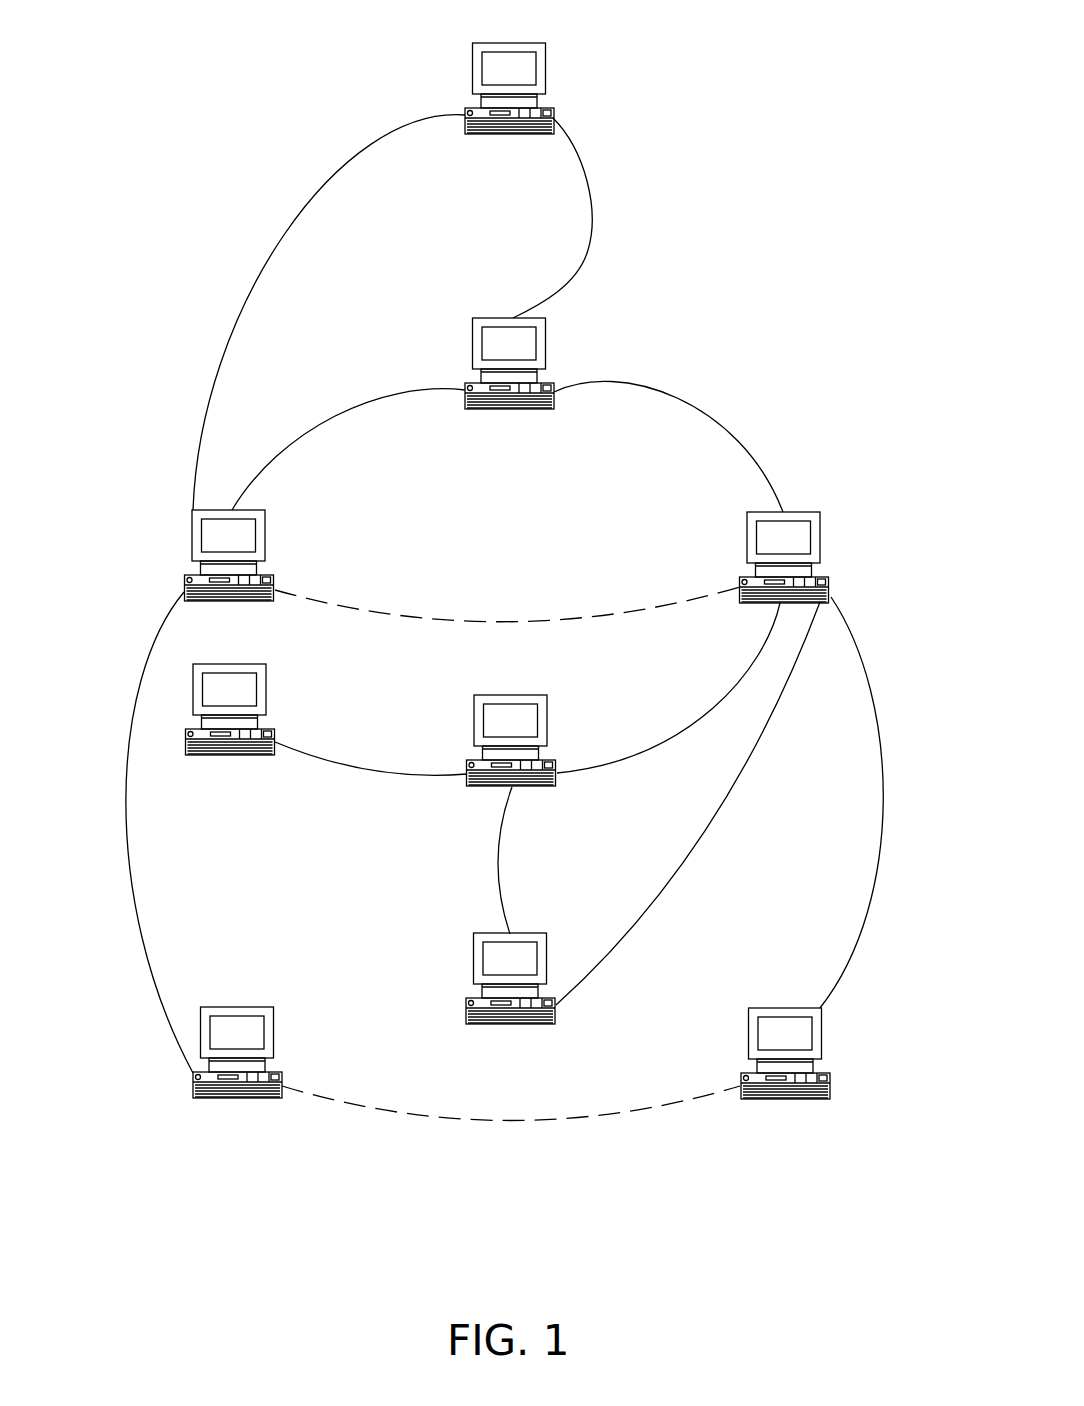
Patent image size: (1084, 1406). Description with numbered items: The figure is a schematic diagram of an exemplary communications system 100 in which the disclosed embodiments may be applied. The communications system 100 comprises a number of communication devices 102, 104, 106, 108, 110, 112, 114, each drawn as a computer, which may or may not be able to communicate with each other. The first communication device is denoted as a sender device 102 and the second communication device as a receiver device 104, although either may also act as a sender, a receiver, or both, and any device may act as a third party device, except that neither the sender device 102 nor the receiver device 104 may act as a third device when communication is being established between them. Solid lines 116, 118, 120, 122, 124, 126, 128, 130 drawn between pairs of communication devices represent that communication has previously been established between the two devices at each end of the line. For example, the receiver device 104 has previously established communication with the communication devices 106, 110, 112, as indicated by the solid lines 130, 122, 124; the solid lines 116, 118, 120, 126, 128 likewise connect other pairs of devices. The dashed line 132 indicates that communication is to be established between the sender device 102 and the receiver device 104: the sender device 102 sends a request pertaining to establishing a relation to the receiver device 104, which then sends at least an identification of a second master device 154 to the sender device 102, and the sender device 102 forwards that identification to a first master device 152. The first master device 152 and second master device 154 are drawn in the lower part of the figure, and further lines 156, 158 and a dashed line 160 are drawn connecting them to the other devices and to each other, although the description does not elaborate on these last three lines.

The communications system 100 is at (733, 118).
The sender device 102 is at (192, 538).
The receiver device 104 is at (820, 538).
The communication device 106 is at (509, 410).
The communication device 108 is at (512, 43).
The communication device 110 is at (514, 695).
The communication device 112 is at (467, 1010).
The communication device 114 is at (233, 755).
The solid line 116 is at (370, 396).
The solid line 118 is at (323, 183).
The solid line 120 is at (590, 236).
The solid line 122 is at (602, 765).
The solid line 124 is at (729, 809).
The solid line 126 is at (320, 757).
The solid line 128 is at (490, 866).
The solid line 130 is at (690, 408).
The dashed line 132 is at (505, 620).
The first master device 152 is at (238, 1100).
The second master device 154 is at (787, 1100).
The communication link 156 is at (170, 1033).
The communication link 158 is at (858, 1010).
The communication link 160 is at (540, 1122).